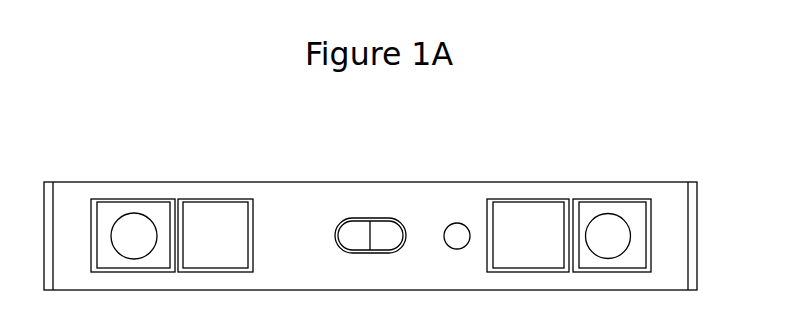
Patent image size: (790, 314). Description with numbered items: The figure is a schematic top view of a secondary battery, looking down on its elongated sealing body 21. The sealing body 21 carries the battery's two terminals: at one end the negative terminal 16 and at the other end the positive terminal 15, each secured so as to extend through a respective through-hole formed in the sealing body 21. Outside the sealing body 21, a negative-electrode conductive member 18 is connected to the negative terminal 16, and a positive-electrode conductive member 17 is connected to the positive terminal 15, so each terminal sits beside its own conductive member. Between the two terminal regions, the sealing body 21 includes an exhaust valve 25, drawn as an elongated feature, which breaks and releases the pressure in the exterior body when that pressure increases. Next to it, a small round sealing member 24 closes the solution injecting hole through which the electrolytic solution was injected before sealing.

The sealing body 21 is at (401, 182).
The negative terminal 16 is at (137, 218).
The negative-electrode conductive member 18 is at (215, 213).
The exhaust valve 25 is at (358, 217).
The sealing member 24 is at (456, 224).
The positive-electrode conductive member 17 is at (533, 230).
The positive terminal 15 is at (609, 218).